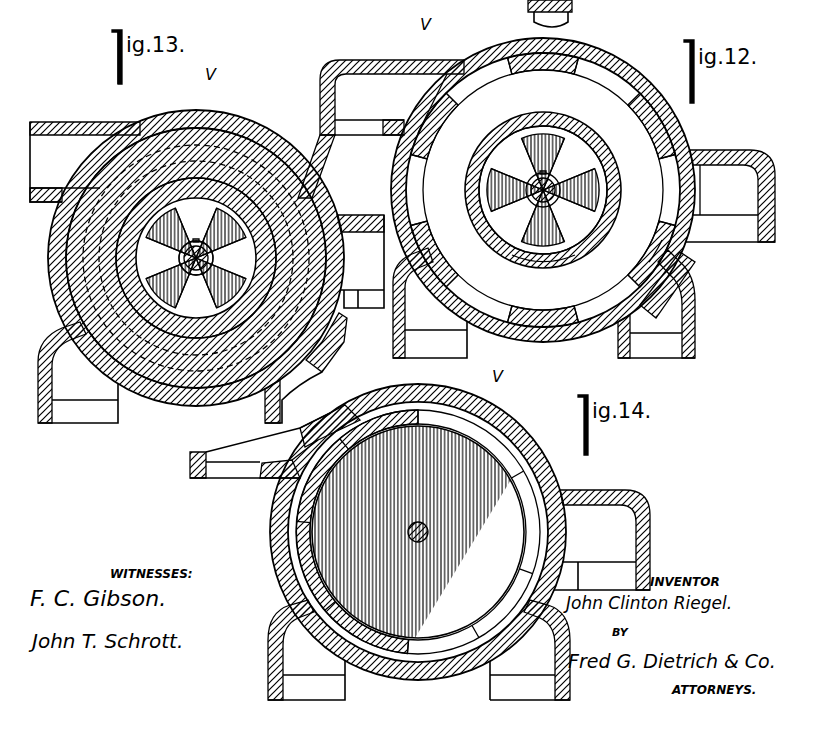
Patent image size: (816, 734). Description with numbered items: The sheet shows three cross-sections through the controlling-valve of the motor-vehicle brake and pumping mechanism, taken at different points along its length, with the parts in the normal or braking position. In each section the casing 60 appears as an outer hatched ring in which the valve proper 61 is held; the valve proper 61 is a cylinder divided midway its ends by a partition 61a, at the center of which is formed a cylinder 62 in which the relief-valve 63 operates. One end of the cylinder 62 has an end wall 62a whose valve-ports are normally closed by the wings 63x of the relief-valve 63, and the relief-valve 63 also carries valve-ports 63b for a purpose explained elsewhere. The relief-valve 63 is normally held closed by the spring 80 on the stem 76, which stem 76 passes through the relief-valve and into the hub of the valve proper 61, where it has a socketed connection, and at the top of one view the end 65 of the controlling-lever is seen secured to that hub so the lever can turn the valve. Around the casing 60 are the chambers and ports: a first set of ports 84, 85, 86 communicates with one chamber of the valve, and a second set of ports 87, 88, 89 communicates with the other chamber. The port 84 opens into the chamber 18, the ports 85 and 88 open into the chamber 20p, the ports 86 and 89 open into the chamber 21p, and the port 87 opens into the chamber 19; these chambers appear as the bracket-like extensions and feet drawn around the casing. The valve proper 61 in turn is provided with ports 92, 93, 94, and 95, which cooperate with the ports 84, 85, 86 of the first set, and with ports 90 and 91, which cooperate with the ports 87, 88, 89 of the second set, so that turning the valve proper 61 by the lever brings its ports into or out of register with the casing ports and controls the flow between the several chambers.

In FIG. 13, the chamber 18 is at (360, 261).
In FIG. 12, the chamber 18 is at (730, 228).
In FIG. 14, the chamber 18 is at (602, 540).
In FIG. 13, the chamber 19 is at (306, 368).
In FIG. 12, the chamber 19 is at (656, 345).
In FIG. 14, the chamber 19 is at (530, 680).
In FIG. 13, the chamber 20p is at (78, 372).
In FIG. 12, the chamber 20p is at (430, 340).
In FIG. 14, the chamber 20p is at (306, 680).
In FIG. 13, the chamber 21p is at (85, 162).
In FIG. 12, the chamber 21p is at (381, 129).
In FIG. 14, the chamber 21p is at (218, 450).
In FIG. 13, the casing 60 is at (196, 248).
In FIG. 12, the casing 60 is at (555, 190).
In FIG. 14, the casing 60 is at (401, 532).
In FIG. 13, the valve proper 61 is at (172, 126).
In FIG. 12, the valve proper 61 is at (598, 76).
In FIG. 14, the valve proper 61 is at (406, 641).
In FIG. 12, the partition 61a is at (543, 190).
In FIG. 12, the cylinder 62 is at (526, 262).
In FIG. 13, the end wall 62a is at (242, 247).
In FIG. 12, the end wall 62a is at (627, 254).
In FIG. 13, the relief-valve 63 is at (247, 216).
In FIG. 12, the relief-valve 63 is at (524, 142).
In FIG. 13, the wings 63x is at (213, 214).
In FIG. 12, the wings 63x is at (542, 189).
In FIG. 12, the valve-ports 63b is at (588, 183).
In FIG. 12, the end of the controlling-lever 65 is at (520, 13).
In FIG. 13, the stem 76 is at (180, 252).
In FIG. 12, the stem 76 is at (538, 201).
In FIG. 14, the stem 76 is at (428, 534).
In FIG. 13, the spring 80 is at (196, 258).
In FIG. 12, the spring 80 is at (563, 197).
In FIG. 12, the port 84 is at (694, 190).
In FIG. 12, the port 85 is at (433, 263).
In FIG. 12, the port 86 is at (447, 89).
In FIG. 14, the port 87 is at (520, 630).
In FIG. 14, the port 88 is at (310, 626).
In FIG. 14, the port 89 is at (312, 450).
In FIG. 14, the port 90 is at (302, 535).
In FIG. 14, the port 91 is at (530, 502).
In FIG. 12, the port 92 is at (636, 272).
In FIG. 12, the port 93 is at (639, 115).
In FIG. 12, the port 94 is at (495, 271).
In FIG. 12, the port 95 is at (461, 108).